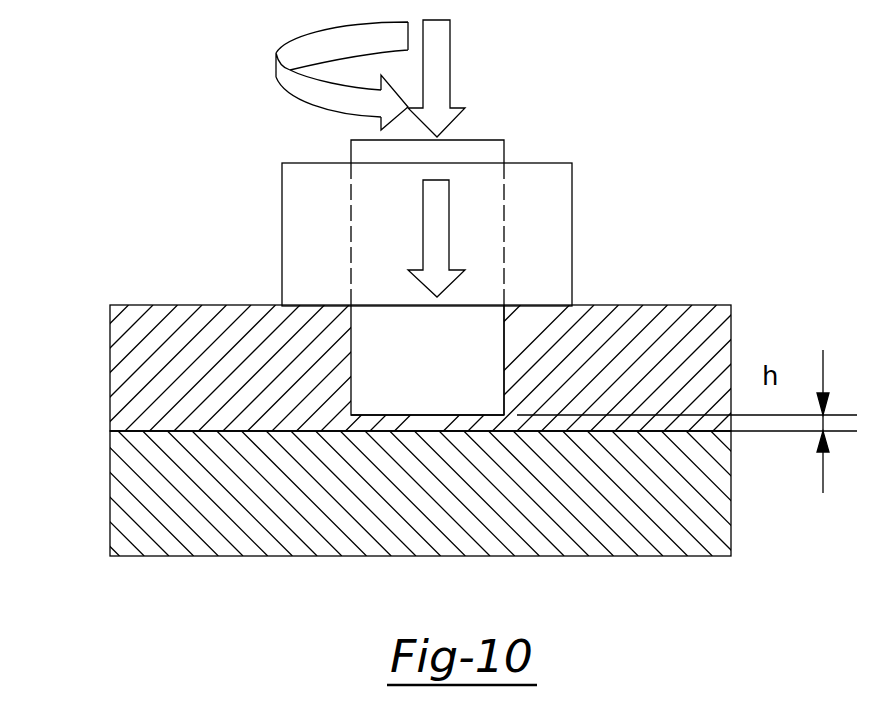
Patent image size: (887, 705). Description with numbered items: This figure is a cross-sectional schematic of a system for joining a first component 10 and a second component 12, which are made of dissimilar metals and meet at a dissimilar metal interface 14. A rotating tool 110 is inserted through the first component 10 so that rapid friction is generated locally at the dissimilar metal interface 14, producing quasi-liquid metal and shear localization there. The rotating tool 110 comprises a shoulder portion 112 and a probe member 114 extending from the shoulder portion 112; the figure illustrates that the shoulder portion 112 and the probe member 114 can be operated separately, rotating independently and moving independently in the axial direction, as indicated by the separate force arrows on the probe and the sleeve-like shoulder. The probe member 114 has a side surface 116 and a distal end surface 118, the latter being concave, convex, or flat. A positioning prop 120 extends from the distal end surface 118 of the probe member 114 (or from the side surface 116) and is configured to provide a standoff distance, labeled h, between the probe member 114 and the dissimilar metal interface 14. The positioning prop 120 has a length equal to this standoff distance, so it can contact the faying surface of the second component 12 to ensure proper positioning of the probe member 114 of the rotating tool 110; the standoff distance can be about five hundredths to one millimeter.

The first component 10 is at (110, 368).
The second component 12 is at (110, 526).
The dissimilar metal interface 14 is at (110, 431).
The rotating tool 110 is at (420, 217).
The shoulder portion 112 is at (572, 188).
The probe member 114 is at (504, 345).
The side surface 116 is at (351, 352).
The distal end surface 118 is at (377, 415).
The positioning prop 120 is at (427, 431).